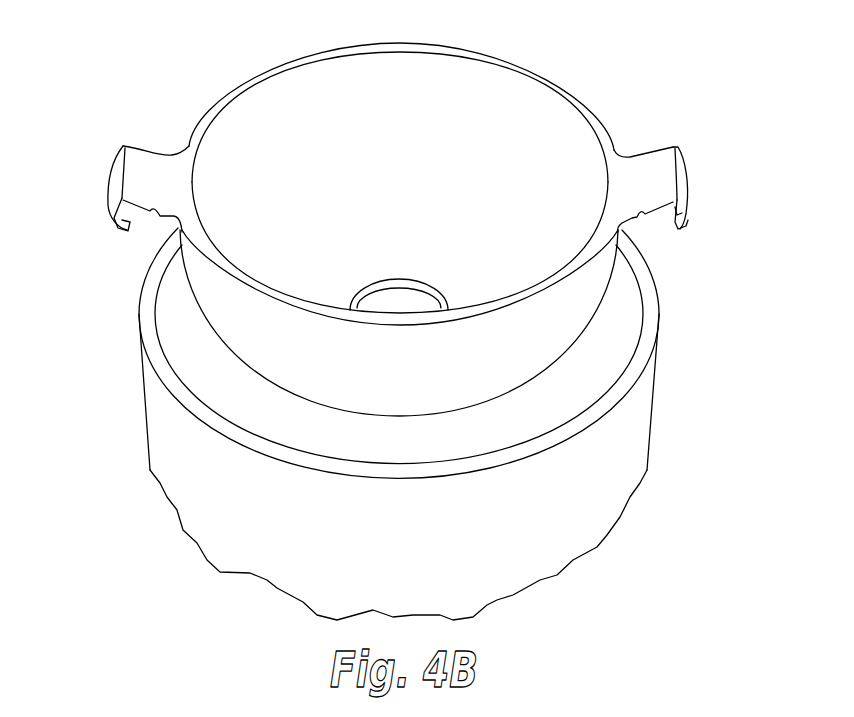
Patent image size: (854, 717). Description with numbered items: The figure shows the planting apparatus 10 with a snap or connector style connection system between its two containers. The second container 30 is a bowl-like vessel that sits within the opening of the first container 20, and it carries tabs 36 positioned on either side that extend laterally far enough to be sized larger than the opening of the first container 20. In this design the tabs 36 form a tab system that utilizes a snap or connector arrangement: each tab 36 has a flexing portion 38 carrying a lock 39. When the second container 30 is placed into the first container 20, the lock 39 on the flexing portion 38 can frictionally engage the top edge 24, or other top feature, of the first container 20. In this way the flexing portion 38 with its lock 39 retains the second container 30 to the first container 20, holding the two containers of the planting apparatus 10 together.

The planting apparatus 10 is at (186, 78).
The first container 20 is at (627, 440).
The top edge 24 is at (648, 330).
The second container 30 is at (507, 67).
The tabs 36 is at (657, 158).
The flexing portion 38 is at (688, 197).
The lock 39 is at (676, 230).